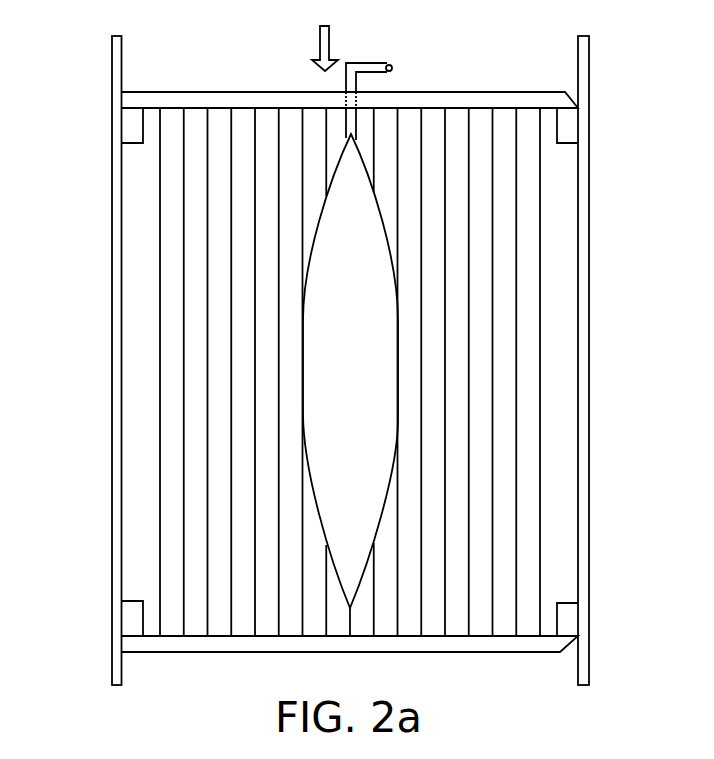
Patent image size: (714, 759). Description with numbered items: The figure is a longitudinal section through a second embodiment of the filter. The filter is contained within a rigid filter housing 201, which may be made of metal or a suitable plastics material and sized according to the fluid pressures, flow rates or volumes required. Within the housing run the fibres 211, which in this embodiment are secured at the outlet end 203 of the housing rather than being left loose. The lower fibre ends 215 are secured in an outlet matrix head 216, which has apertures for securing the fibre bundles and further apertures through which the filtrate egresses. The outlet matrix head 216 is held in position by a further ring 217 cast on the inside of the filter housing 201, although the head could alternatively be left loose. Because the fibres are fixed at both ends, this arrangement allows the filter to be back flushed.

The filter housing 201 is at (112, 214).
The outlet end 203 is at (91, 613).
The fibres 211 is at (541, 377).
The lower fibre ends 215 is at (541, 597).
The outlet matrix head 216 is at (368, 62).
The further ring 217 is at (566, 620).